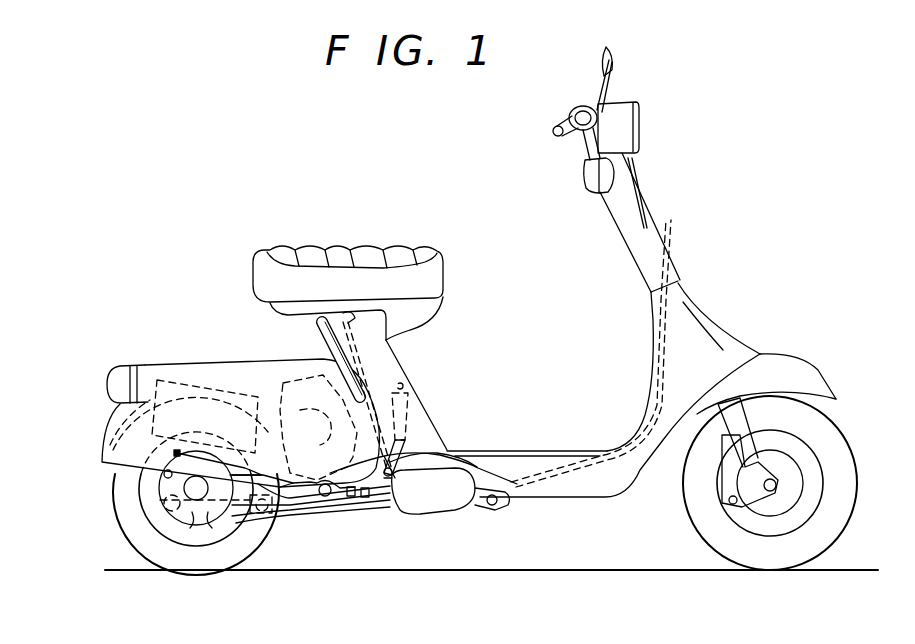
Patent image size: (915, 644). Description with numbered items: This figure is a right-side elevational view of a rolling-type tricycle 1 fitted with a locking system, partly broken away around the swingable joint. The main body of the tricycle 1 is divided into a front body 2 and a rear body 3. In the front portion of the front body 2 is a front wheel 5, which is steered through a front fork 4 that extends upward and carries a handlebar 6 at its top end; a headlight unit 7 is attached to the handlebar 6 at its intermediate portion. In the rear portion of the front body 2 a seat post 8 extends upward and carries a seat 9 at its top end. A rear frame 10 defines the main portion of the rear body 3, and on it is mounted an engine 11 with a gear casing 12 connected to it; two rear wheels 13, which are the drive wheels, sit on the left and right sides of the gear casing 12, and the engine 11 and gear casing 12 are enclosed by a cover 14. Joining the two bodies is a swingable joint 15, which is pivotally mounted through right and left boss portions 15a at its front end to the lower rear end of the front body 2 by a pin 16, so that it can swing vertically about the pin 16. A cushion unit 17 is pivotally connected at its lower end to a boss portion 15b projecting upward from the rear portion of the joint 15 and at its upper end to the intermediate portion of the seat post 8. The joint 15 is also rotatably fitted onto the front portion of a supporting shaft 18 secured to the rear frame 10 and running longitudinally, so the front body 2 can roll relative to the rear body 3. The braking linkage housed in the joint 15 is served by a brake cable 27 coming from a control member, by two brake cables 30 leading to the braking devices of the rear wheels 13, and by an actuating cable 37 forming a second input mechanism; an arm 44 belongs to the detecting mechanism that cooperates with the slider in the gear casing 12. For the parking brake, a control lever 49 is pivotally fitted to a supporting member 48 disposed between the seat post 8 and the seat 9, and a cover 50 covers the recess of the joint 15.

The tricycle 1 is at (697, 268).
The front body 2 is at (640, 487).
The rear body 3 is at (226, 360).
The front fork 4 is at (740, 420).
The front wheel 5 is at (853, 500).
The handlebar 6 is at (563, 136).
The headlight unit 7 is at (628, 118).
The seat post 8 is at (428, 437).
The seat 9 is at (372, 250).
The rear frame 10 is at (303, 520).
The engine 11 is at (295, 378).
The gear casing 12 is at (236, 533).
The rear wheels 13 is at (130, 528).
The cover 14 is at (173, 370).
The swingable joint 15 is at (429, 537).
The boss portions 15a is at (503, 498).
The boss portion 15b is at (440, 463).
The pin 16 is at (493, 508).
The cushion unit 17 is at (408, 412).
The supporting shaft 18 is at (348, 512).
The brake cable 27 is at (638, 212).
The brake cables 30 is at (368, 513).
The actuating cable 37 is at (345, 513).
The arm 44 is at (173, 455).
The supporting member 48 is at (418, 318).
The parking brake control lever 49 is at (377, 372).
The cover 50 is at (417, 503).